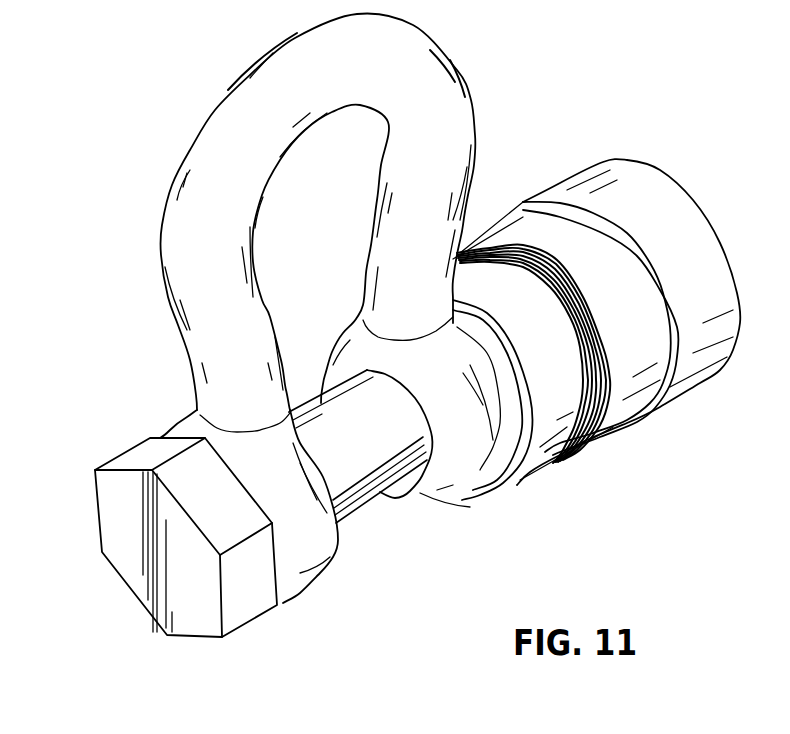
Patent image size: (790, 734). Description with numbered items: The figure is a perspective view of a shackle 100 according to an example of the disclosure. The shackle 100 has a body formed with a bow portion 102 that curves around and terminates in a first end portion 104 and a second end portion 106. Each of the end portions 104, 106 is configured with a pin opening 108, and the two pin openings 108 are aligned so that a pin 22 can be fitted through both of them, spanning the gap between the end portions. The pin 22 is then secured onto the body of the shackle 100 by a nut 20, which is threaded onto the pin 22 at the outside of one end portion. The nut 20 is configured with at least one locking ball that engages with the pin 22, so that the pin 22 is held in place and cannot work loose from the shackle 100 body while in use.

The shackle 100 is at (620, 113).
The bow portion 102 is at (228, 113).
The first end portion 104 is at (207, 343).
The second end portion 106 is at (390, 287).
The pin opening 108 is at (323, 477).
The nut 20 is at (617, 403).
The pin 22 is at (112, 497).